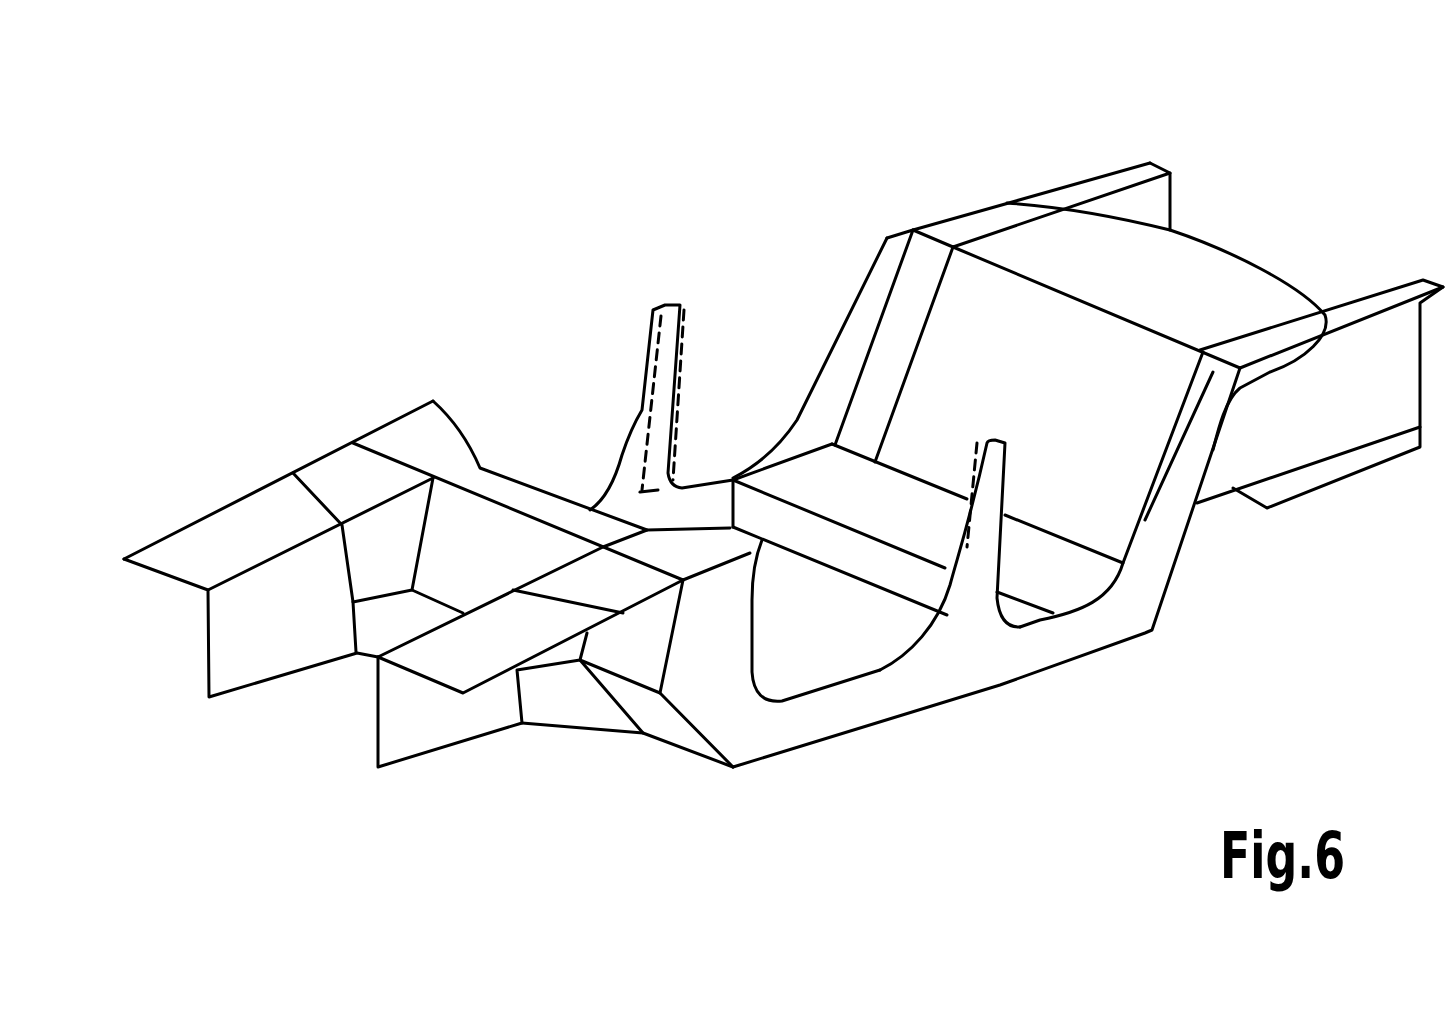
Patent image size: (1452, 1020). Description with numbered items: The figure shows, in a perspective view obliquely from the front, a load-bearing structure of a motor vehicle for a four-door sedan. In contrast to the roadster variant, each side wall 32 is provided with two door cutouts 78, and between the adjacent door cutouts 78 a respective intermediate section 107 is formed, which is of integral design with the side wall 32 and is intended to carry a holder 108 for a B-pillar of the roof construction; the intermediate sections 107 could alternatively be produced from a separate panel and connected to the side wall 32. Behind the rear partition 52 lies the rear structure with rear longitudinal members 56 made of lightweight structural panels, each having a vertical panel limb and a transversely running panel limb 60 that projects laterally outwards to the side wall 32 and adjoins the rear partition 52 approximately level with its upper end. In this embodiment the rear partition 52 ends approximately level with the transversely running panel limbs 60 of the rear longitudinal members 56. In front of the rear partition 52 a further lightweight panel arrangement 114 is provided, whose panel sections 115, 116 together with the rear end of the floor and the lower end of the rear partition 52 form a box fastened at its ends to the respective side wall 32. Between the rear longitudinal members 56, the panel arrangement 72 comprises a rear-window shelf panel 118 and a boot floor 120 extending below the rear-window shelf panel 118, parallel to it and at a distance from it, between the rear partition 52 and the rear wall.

The side wall 32 is at (929, 728).
The rear partition 52 is at (1005, 375).
The rear longitudinal member 56 is at (1083, 160).
The panel limb 60 is at (1050, 197).
The panel arrangement 72 is at (1227, 215).
The door cutout 78 is at (812, 686).
The intermediate section 107 is at (970, 600).
The holder 108 is at (648, 425).
The panel arrangement 114 is at (824, 504).
The panel section 115 is at (930, 533).
The panel section 116 is at (850, 557).
The rear-window shelf panel 118 is at (1240, 278).
The boot floor 120 is at (1335, 432).